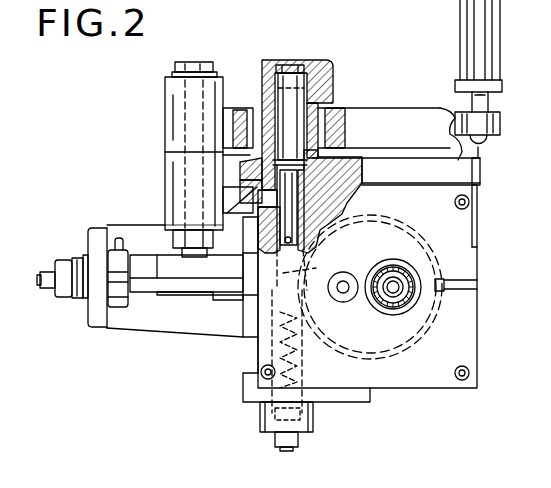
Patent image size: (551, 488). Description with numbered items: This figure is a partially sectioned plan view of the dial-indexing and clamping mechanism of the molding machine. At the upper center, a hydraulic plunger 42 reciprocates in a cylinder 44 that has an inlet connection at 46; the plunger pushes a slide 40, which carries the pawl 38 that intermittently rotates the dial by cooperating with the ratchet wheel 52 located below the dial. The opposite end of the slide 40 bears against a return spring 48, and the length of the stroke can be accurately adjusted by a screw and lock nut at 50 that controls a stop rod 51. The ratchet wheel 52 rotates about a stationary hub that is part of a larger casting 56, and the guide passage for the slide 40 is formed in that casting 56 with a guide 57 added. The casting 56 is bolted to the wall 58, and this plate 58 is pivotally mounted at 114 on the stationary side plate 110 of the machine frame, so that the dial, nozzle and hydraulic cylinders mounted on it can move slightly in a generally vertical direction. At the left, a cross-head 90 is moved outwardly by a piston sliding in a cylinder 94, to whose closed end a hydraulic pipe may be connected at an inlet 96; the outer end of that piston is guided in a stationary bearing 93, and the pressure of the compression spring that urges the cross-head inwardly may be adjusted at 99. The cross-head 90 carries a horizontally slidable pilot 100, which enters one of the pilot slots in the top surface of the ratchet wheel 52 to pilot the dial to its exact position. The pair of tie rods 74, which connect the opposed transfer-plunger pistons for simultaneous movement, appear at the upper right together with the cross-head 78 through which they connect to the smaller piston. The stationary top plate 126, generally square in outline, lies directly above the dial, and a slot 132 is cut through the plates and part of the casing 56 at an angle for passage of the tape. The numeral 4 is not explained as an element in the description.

The wheel 4 is at (478, 152).
The pawl 38 is at (306, 266).
The slide 40 is at (350, 198).
The hydraulic plunger 42 is at (298, 105).
The cylinder 44 is at (263, 60).
The inlet connection 46 is at (330, 82).
The return spring 48 is at (278, 340).
The screw and lock nut 50 is at (300, 438).
The stop rod 51 is at (292, 383).
The ratchet wheel 52 is at (440, 268).
The casting 56 is at (423, 278).
The guide 57 is at (260, 238).
The wall 58 is at (480, 170).
The tie rods 74 is at (480, 20).
The cross-head 78 is at (501, 120).
The cross-head 90 is at (120, 308).
The stationary bearing 93 is at (90, 318).
The cylinder 94 is at (173, 262).
The inlet 96 is at (226, 300).
The spring pressure adjustment 99 is at (50, 262).
The pilot 100 is at (178, 284).
The stationary side plate 110 is at (388, 115).
The pivot 114 is at (195, 63).
The stationary top plate 126 is at (467, 341).
The slot 132 is at (463, 284).